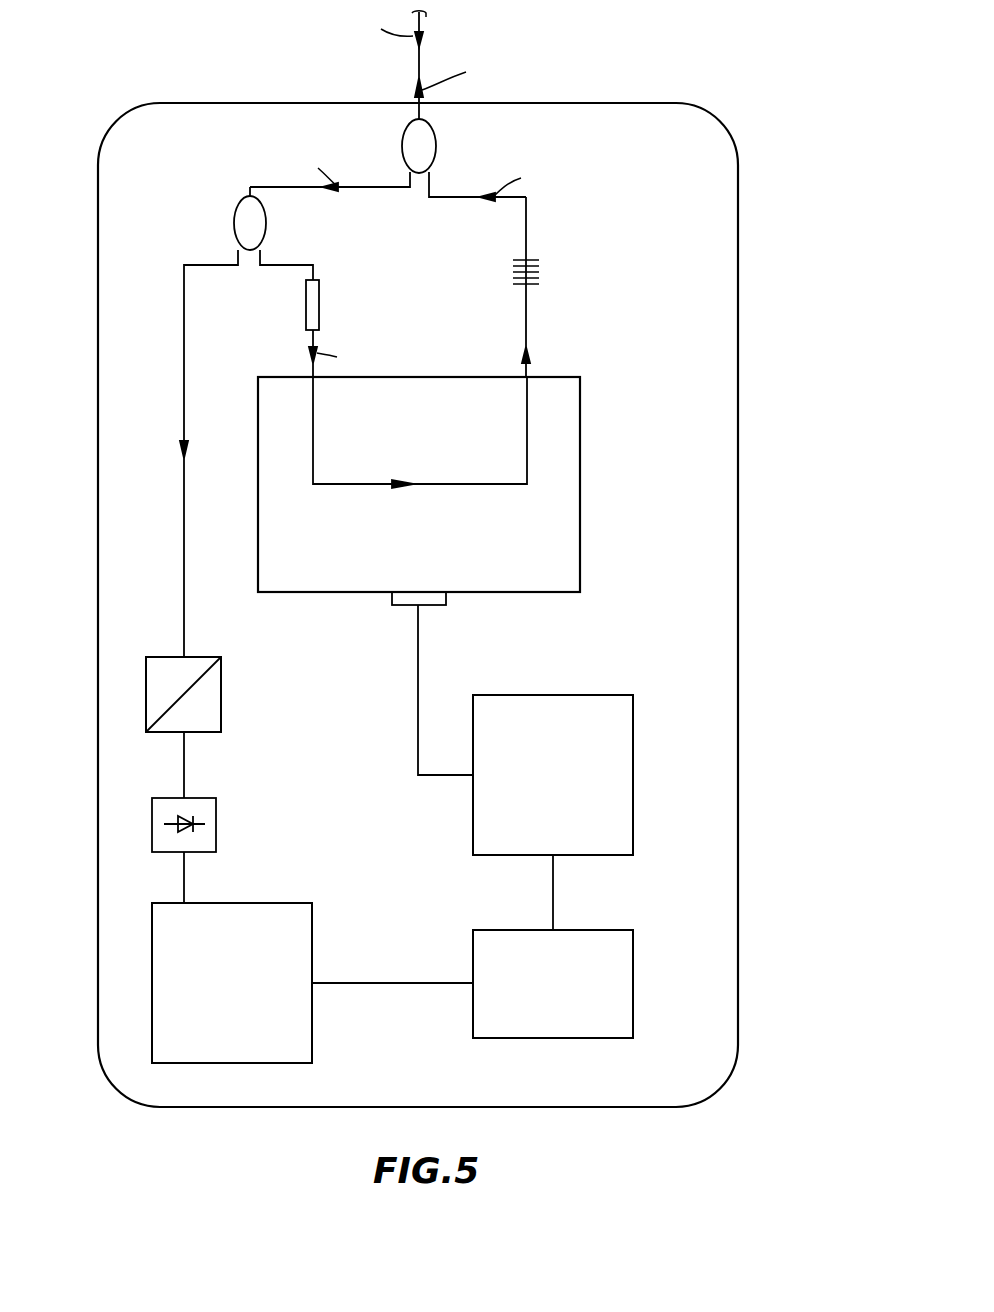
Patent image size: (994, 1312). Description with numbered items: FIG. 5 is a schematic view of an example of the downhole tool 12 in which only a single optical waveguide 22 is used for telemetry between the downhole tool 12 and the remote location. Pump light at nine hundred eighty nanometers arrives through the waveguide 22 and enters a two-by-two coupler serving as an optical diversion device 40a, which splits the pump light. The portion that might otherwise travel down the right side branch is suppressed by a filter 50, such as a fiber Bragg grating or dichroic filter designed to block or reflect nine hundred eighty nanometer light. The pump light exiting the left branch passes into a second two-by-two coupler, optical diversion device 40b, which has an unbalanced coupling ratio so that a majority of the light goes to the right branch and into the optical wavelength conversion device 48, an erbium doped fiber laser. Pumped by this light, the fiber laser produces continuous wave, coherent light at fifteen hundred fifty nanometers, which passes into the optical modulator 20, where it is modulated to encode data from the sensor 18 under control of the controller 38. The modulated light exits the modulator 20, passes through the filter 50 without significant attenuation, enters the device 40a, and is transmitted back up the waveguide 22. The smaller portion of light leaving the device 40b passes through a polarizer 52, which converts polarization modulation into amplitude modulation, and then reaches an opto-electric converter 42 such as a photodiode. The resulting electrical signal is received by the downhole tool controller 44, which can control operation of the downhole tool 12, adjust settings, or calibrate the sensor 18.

The downhole tool 12 is at (748, 105).
The optical waveguide 22 is at (423, 22).
The optical diversion device 40a is at (437, 128).
The optical diversion device 40b is at (237, 208).
The optical wavelength conversion device 48 is at (320, 297).
The filter 50 is at (542, 247).
The optical modulator 20 is at (580, 435).
The polarizer 52 is at (223, 682).
The opto-electric converter 42 is at (205, 797).
The downhole tool controller 44 is at (262, 903).
The controller 38 is at (634, 722).
The sensor 18 is at (634, 960).